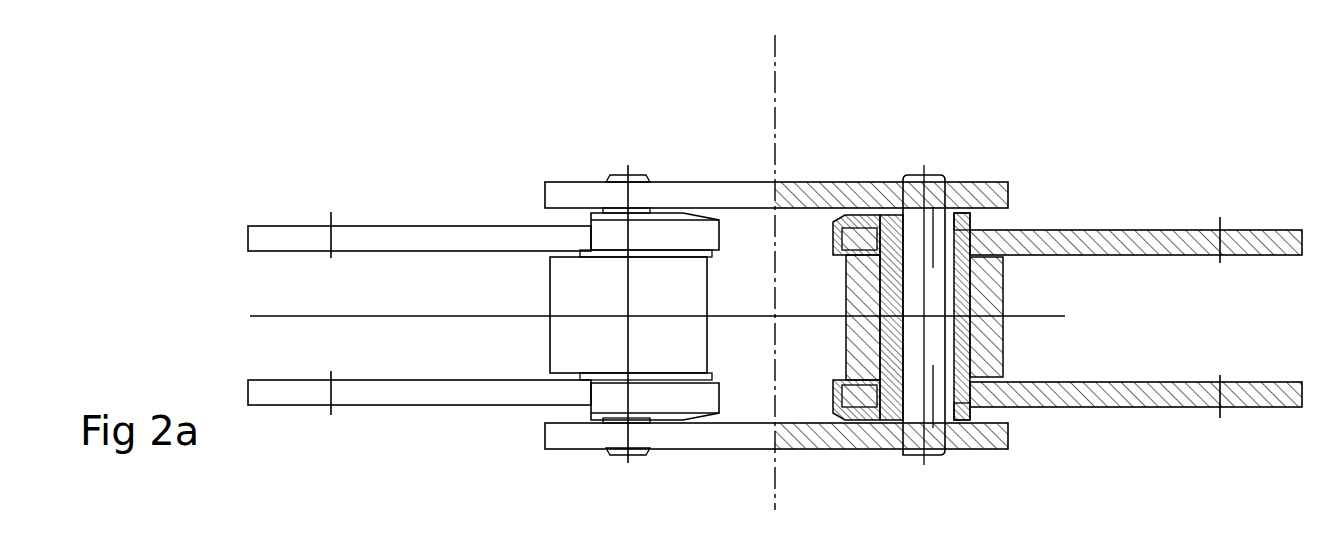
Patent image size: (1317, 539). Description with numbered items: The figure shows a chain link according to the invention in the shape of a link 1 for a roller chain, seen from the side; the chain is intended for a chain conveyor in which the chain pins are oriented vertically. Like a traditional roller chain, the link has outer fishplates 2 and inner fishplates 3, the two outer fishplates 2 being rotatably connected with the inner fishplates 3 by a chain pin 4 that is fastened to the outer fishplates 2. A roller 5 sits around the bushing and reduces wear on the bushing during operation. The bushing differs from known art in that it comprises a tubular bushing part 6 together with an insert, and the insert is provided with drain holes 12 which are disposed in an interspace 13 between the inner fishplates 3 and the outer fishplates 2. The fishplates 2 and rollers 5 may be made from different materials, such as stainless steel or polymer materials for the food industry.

The link 1 is at (1146, 131).
The outer fishplates 2 is at (573, 182).
The inner fishplates 3 is at (525, 227).
The chain pin 4 is at (622, 172).
The roller 5 is at (558, 304).
The tubular bushing part 6 is at (978, 224).
The drain holes 12 is at (975, 218).
The interspace 13 is at (1005, 398).